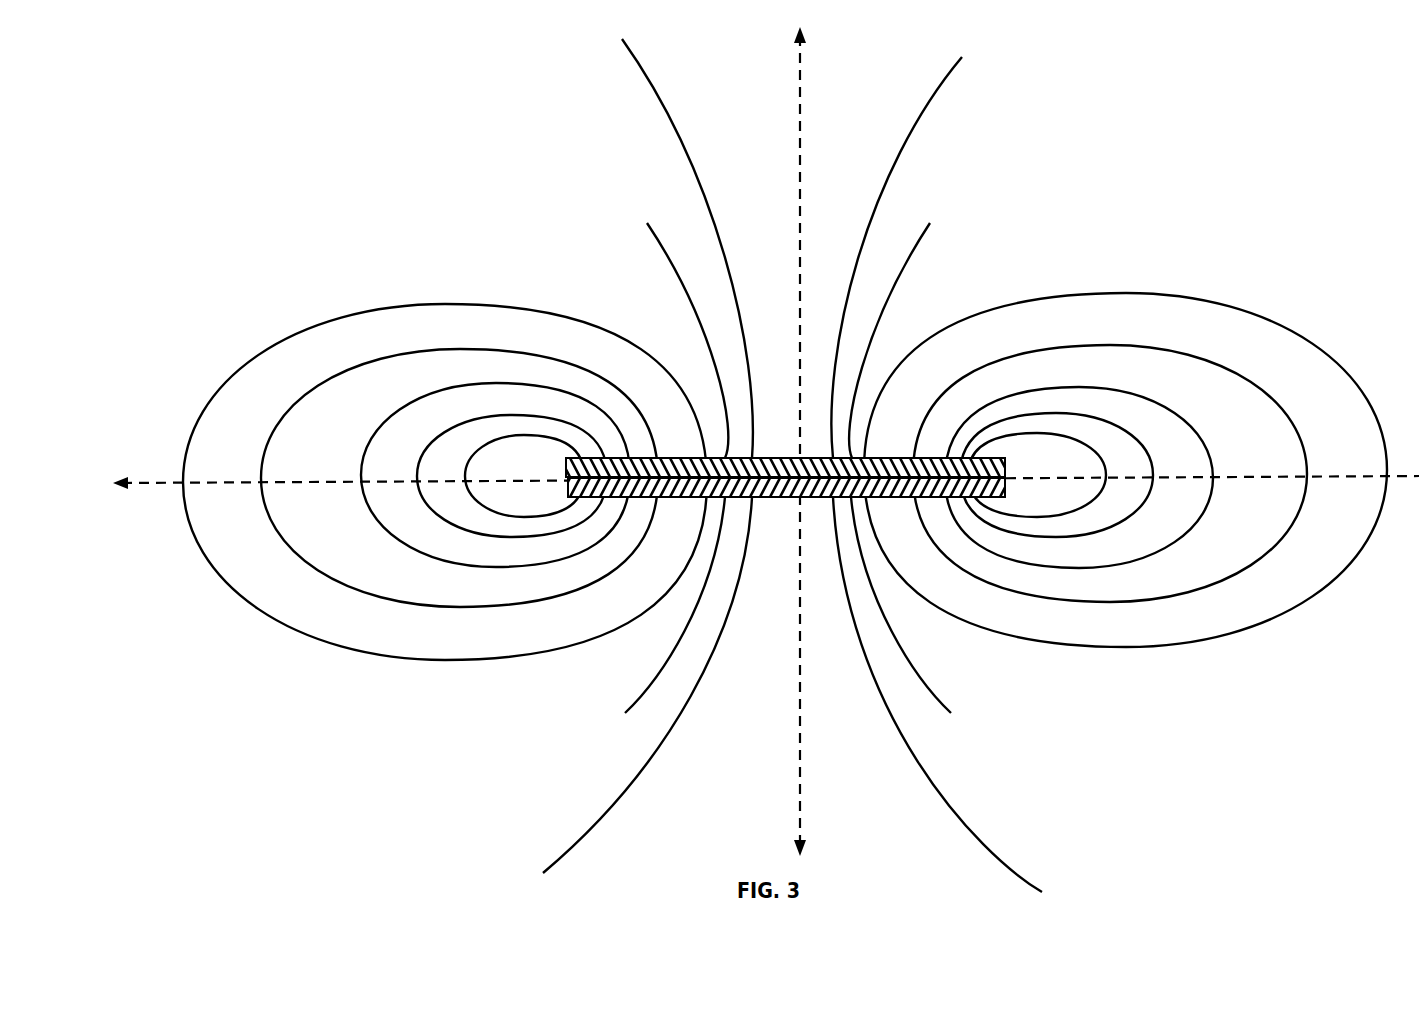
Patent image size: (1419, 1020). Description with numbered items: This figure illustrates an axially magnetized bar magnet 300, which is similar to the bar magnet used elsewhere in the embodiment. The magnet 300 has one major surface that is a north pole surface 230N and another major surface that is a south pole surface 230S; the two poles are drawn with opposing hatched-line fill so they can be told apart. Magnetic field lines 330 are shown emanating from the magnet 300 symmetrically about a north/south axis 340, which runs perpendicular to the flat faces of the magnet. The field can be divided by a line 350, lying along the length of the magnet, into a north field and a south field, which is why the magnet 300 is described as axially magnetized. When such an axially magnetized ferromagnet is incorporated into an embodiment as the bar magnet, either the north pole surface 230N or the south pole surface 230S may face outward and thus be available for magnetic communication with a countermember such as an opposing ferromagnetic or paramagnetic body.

The axially magnetized bar magnet 300 is at (413, 208).
The north pole surface 230N is at (770, 456).
The south pole surface 230S is at (783, 505).
The magnetic field lines 330 is at (1195, 298).
The north/south axis 340 is at (795, 148).
The line 350 is at (147, 473).